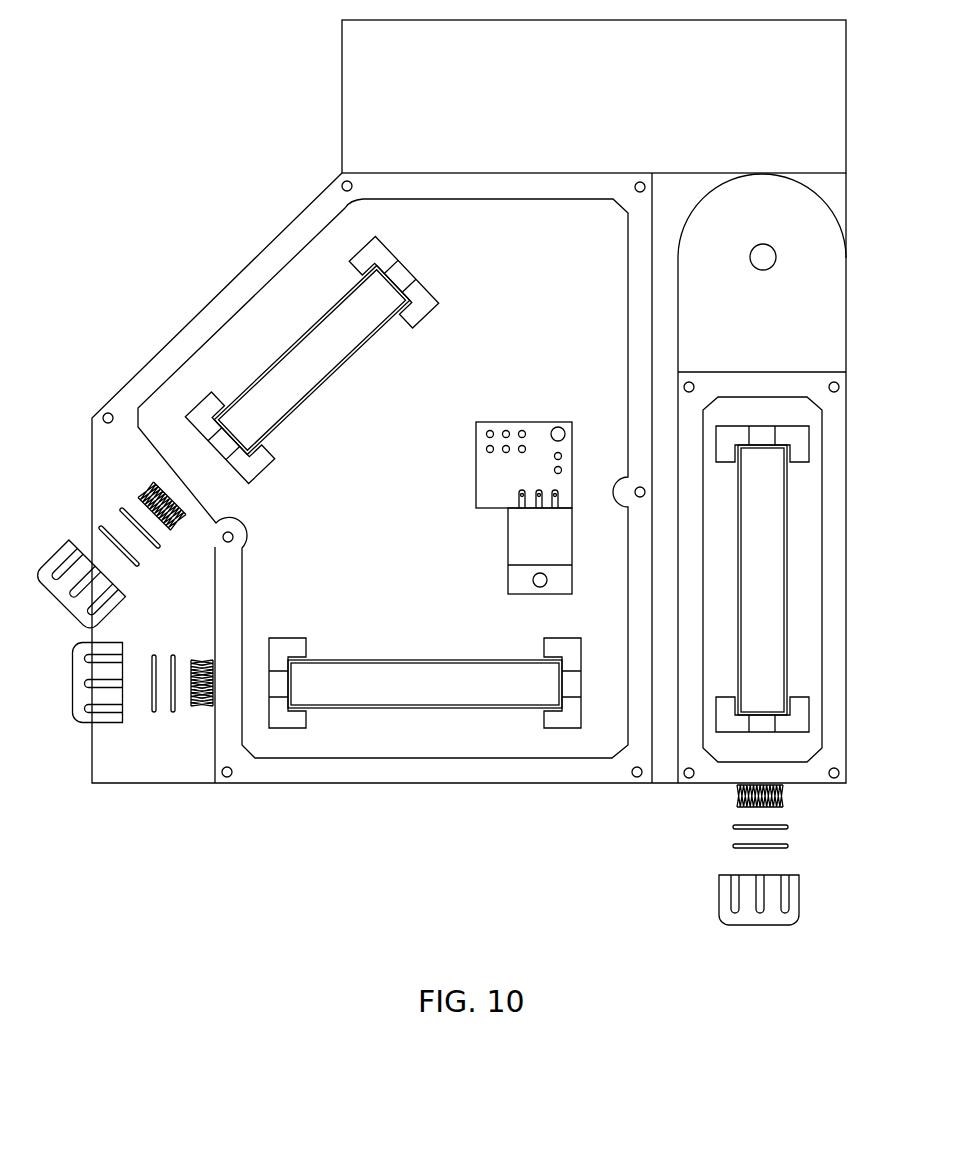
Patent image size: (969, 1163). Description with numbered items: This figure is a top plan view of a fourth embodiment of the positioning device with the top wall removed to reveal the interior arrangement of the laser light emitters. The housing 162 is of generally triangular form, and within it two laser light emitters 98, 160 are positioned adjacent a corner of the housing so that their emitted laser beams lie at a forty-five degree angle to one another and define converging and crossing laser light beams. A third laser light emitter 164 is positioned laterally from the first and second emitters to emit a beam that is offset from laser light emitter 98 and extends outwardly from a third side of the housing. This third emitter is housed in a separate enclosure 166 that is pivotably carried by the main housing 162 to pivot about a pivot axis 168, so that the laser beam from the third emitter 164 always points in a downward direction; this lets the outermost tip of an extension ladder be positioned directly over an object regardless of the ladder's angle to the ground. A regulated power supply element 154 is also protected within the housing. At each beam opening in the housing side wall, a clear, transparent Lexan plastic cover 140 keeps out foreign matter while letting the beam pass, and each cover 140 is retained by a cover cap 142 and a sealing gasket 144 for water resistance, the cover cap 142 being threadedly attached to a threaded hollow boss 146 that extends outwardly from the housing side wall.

The laser light beam emitter 98 is at (452, 710).
The cover 140 is at (733, 846).
The cover cap 142 is at (719, 898).
The sealing gasket 144 is at (733, 826).
The threaded hollow boss 146 is at (783, 797).
The regulated power supply element 154 is at (510, 541).
The laser light emitter 160 is at (330, 380).
The housing 162 is at (307, 218).
The third laser light emitter 164 is at (787, 558).
The separate enclosure 166 is at (838, 443).
The pivot axis 168 is at (763, 270).